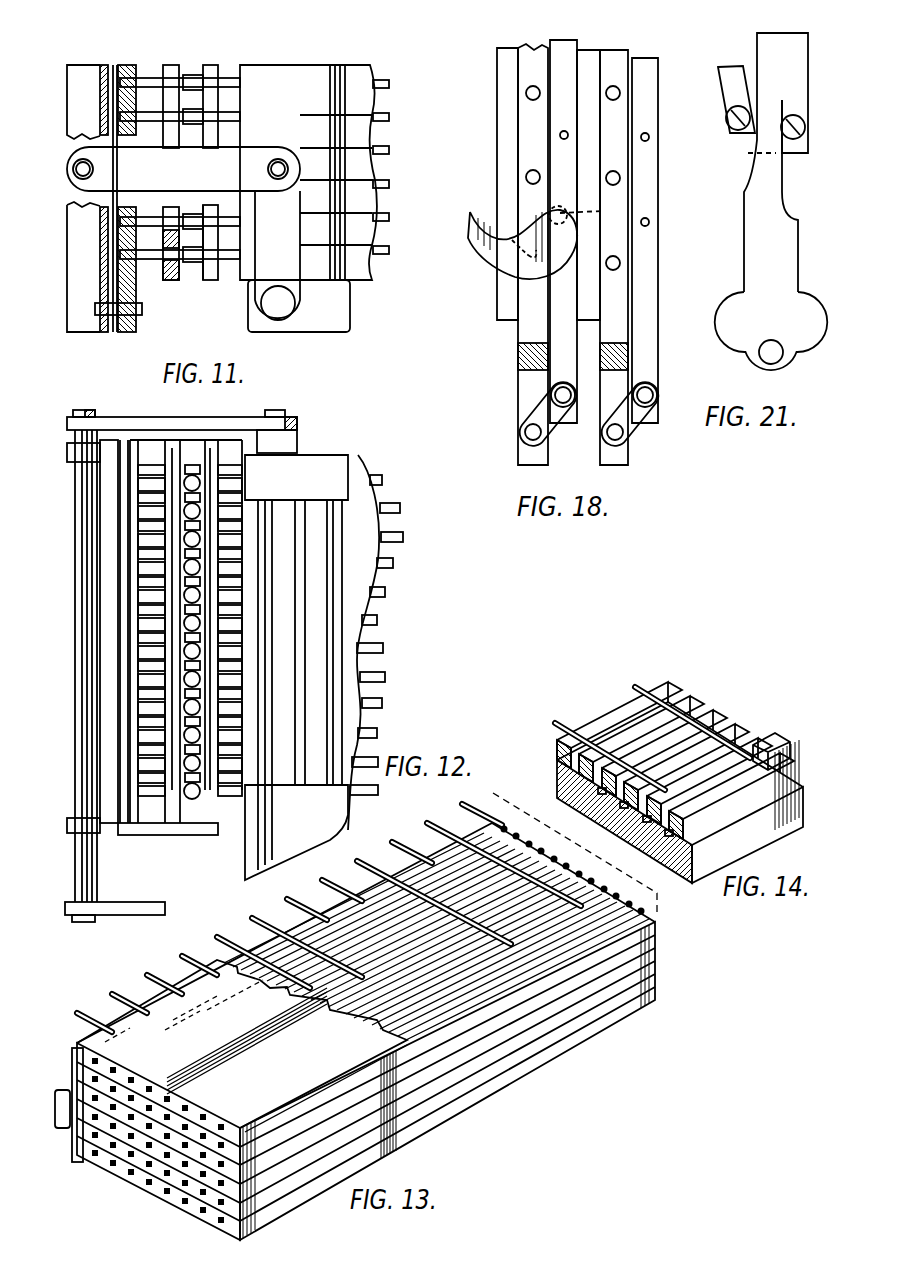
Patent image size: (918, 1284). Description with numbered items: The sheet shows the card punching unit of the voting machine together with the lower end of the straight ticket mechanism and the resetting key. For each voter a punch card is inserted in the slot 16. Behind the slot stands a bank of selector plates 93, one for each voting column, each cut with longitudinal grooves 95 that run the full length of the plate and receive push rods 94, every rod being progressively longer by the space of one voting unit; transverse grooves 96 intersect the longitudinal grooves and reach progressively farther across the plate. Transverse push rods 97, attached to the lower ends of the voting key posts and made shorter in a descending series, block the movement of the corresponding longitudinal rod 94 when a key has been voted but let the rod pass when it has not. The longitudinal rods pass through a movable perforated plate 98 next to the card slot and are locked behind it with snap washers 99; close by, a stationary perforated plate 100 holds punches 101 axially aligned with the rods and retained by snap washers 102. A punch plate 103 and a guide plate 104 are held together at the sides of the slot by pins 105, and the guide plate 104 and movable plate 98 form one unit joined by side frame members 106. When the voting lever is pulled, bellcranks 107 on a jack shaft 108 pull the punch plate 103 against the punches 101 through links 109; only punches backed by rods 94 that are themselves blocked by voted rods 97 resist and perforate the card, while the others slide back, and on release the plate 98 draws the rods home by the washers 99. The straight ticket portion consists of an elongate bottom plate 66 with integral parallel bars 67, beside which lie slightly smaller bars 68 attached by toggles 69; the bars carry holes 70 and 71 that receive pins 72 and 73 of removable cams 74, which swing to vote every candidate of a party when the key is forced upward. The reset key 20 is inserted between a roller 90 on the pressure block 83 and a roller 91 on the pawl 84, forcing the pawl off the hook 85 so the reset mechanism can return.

In FIG. 11, the slot 16 is at (104, 65).
In FIG. 21, the reset key 20 is at (746, 252).
In FIG. 18, the elongate bottom plate 66 is at (498, 112).
In FIG. 18, the parallel bars 67 is at (638, 52).
In FIG. 18, the bars 68 is at (558, 136).
In FIG. 18, the toggles 69 is at (536, 402).
In FIG. 18, the holes 70 is at (528, 88).
In FIG. 18, the holes 71 is at (564, 131).
In FIG. 18, the pins 72 is at (514, 246).
In FIG. 18, the pins 73 is at (585, 218).
In FIG. 18, the cams 74 is at (472, 256).
In FIG. 21, the pressure block 83 is at (804, 86).
In FIG. 21, the pawl 84 is at (724, 90).
In FIG. 21, the hook 85 is at (740, 138).
In FIG. 21, the roller 90 is at (805, 118).
In FIG. 21, the roller 91 is at (726, 119).
In FIG. 11, the selector plates 93 is at (350, 285).
In FIG. 12, the selector plates 93 is at (322, 573).
In FIG. 14, the selector plates 93 is at (733, 815).
In FIG. 13, the selector plates 93 is at (470, 1097).
In FIG. 11, the push rods 94 is at (235, 88).
In FIG. 12, the push rods 94 is at (380, 620).
In FIG. 14, the push rods 94 is at (585, 818).
In FIG. 13, the push rods 94 is at (95, 1165).
In FIG. 14, the longitudinal grooves 95 is at (625, 730).
In FIG. 13, the longitudinal grooves 95 is at (158, 1188).
In FIG. 14, the transverse grooves 96 is at (770, 722).
In FIG. 13, the transverse grooves 96 is at (655, 912).
In FIG. 14, the transverse push rods 97 is at (640, 700).
In FIG. 13, the transverse push rods 97 is at (105, 998).
In FIG. 11, the movable perforated plate 98 is at (220, 66).
In FIG. 12, the movable perforated plate 98 is at (215, 812).
In FIG. 13, the movable perforated plate 98 is at (72, 1150).
In FIG. 11, the snap washers 99 is at (204, 206).
In FIG. 12, the snap washers 99 is at (205, 472).
In FIG. 11, the stationary perforated plate 100 is at (170, 66).
In FIG. 12, the stationary perforated plate 100 is at (170, 775).
In FIG. 11, the punches 101 is at (143, 135).
In FIG. 12, the punches 101 is at (148, 728).
In FIG. 11, the snap washers 102 is at (185, 140).
In FIG. 12, the snap washers 102 is at (182, 465).
In FIG. 11, the punch plate 103 is at (66, 196).
In FIG. 12, the punch plate 103 is at (100, 476).
In FIG. 11, the guide plate 104 is at (136, 66).
In FIG. 12, the guide plate 104 is at (123, 605).
In FIG. 11, the pins 105 is at (140, 313).
In FIG. 12, the side frame members 106 is at (147, 438).
In FIG. 13, the side frame members 106 is at (55, 1112).
In FIG. 11, the bellcranks 107 is at (296, 223).
In FIG. 12, the bellcranks 107 is at (297, 440).
In FIG. 11, the jack shaft 108 is at (284, 300).
In FIG. 11, the links 109 is at (248, 155).
In FIG. 12, the links 109 is at (200, 418).